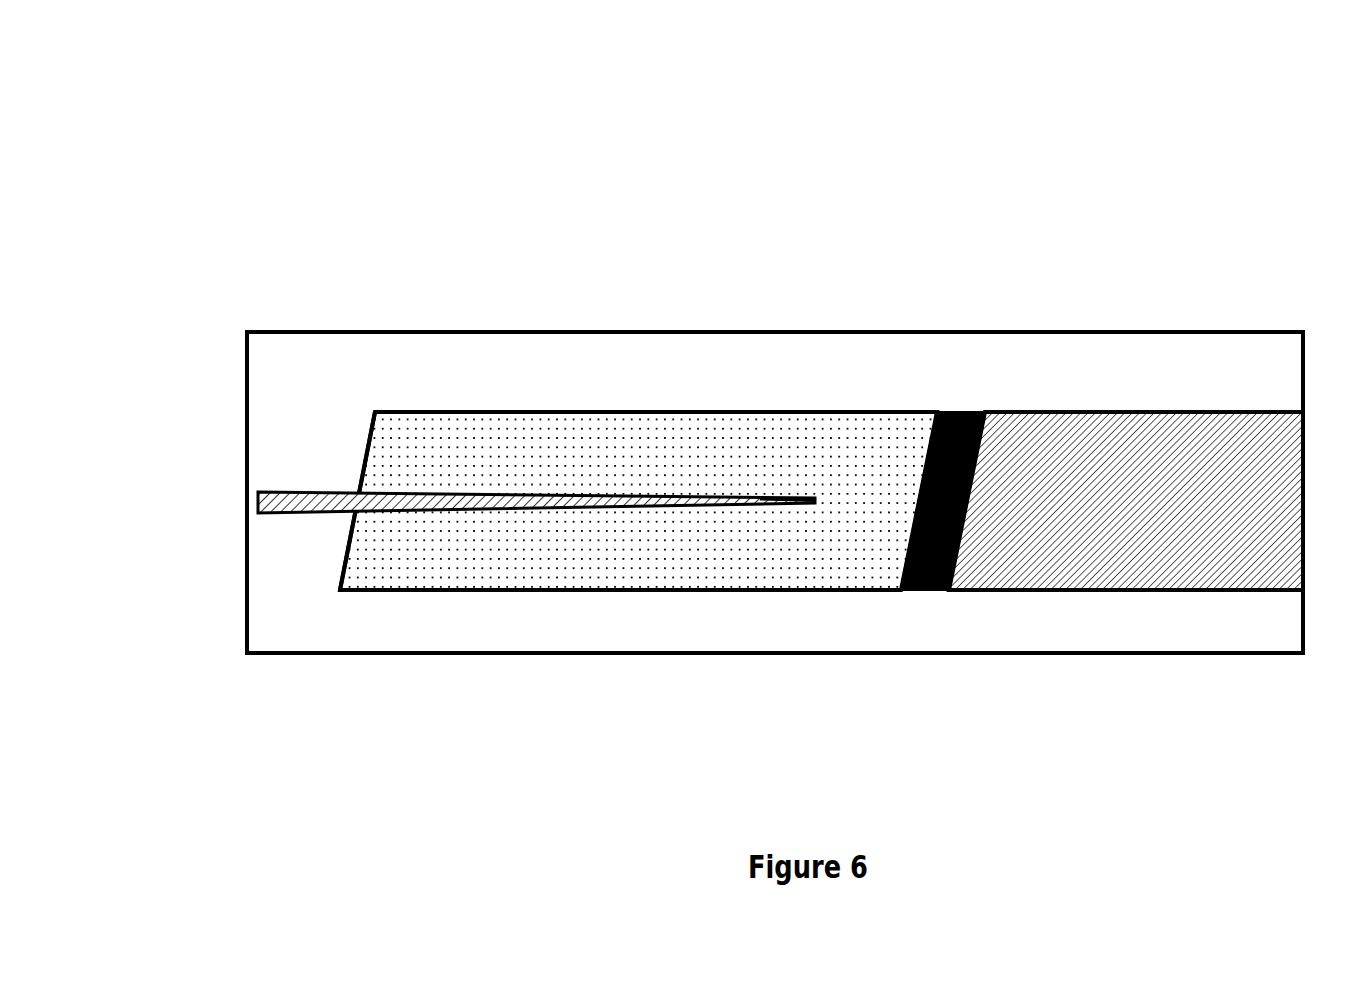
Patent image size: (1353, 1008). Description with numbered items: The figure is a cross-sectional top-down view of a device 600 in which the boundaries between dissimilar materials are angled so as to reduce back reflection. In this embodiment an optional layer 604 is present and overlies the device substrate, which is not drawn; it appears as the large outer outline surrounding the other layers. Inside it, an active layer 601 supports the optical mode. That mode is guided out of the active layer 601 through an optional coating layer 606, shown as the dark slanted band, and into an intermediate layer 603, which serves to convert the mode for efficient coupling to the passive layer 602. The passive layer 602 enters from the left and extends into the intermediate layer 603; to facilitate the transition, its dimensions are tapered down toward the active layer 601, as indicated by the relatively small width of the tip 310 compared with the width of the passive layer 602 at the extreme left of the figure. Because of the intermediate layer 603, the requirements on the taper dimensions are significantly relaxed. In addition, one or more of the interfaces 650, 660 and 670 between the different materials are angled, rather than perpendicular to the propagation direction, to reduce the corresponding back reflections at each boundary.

The device 600 is at (470, 112).
The active layer 601 is at (1252, 425).
The passive layer 602 is at (258, 492).
The intermediate layer 603 is at (645, 412).
The optional layer 604 is at (435, 345).
The optional coating layer 606 is at (963, 412).
The interface 650 is at (367, 450).
The interface 660 is at (930, 448).
The interface 670 is at (977, 457).
The tip 310 is at (815, 497).